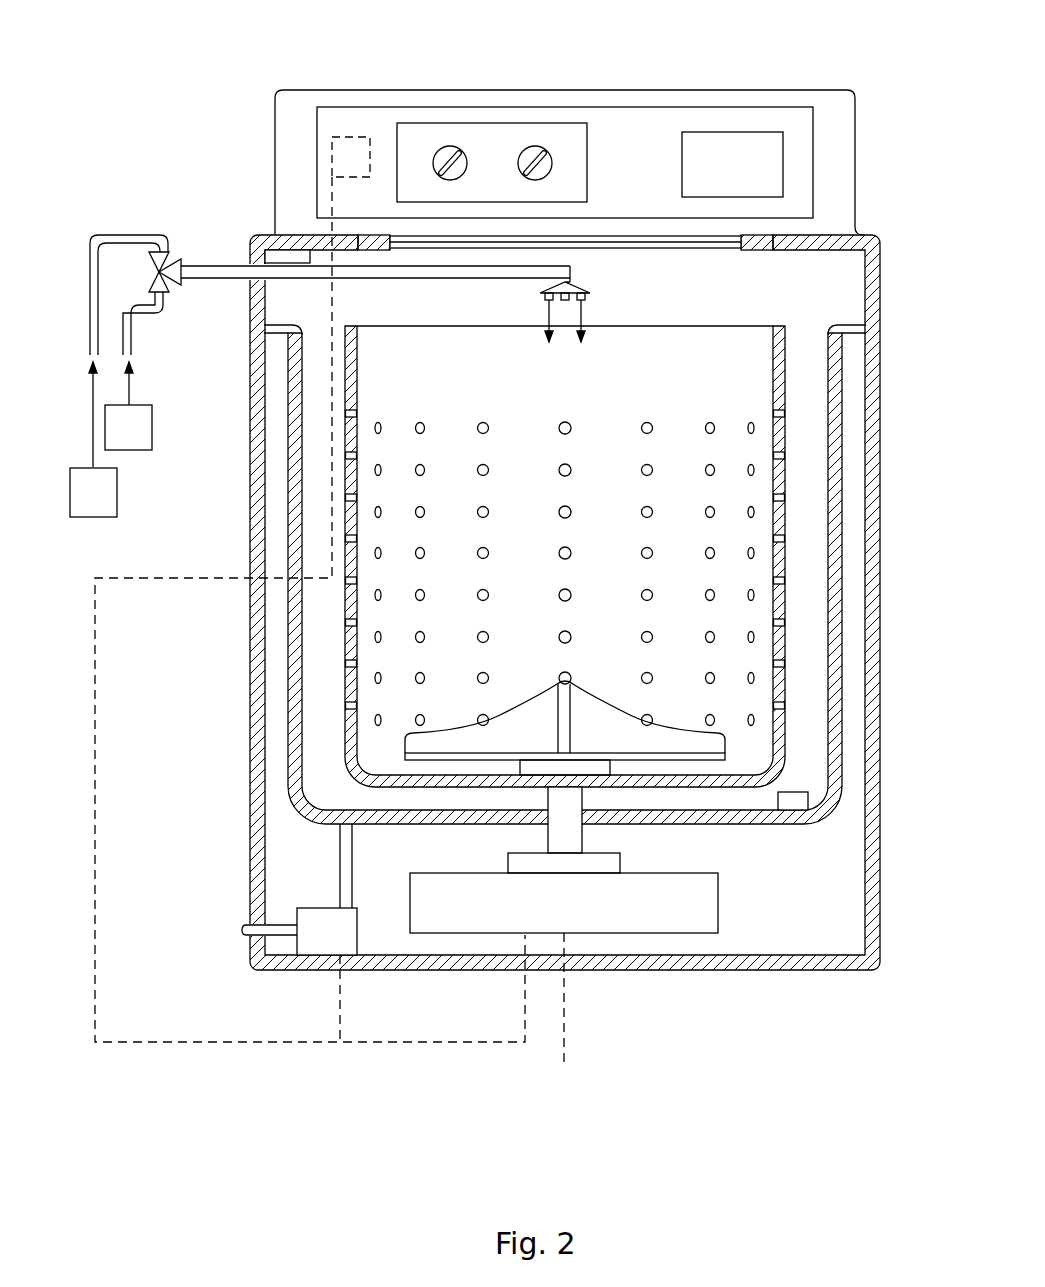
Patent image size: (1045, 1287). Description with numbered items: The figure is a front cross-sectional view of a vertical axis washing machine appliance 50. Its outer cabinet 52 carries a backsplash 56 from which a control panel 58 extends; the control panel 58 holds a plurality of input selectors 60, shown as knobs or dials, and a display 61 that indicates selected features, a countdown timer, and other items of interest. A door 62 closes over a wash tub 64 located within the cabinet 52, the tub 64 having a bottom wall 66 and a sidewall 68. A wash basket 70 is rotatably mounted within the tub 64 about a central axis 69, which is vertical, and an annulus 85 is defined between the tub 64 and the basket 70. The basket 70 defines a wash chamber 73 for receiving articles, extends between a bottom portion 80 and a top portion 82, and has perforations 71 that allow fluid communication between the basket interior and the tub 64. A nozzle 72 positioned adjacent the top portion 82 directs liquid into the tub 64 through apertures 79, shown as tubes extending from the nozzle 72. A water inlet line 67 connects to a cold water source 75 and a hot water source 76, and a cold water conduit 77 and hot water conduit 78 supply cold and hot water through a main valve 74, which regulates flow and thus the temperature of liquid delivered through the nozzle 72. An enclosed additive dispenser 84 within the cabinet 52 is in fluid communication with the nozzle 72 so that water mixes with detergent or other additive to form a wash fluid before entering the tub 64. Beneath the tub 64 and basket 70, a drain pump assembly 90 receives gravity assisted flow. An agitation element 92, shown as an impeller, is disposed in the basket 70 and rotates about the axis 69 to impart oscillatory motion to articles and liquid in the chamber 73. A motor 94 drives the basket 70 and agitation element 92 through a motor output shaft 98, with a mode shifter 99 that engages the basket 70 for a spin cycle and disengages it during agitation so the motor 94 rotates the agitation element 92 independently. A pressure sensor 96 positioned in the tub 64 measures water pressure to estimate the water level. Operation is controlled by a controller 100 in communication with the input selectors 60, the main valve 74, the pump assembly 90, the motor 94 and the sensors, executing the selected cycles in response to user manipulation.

The washing machine appliance 50 is at (188, 72).
The cabinet 52 is at (875, 918).
The backsplash 56 is at (642, 147).
The control panel 58 is at (490, 128).
The input selectors 60 is at (437, 140).
The display 61 is at (713, 147).
The door 62 is at (717, 237).
The wash tub 64 is at (845, 612).
The bottom wall 66 is at (800, 817).
The water inlet line 67 is at (195, 266).
The sidewall 68 is at (842, 468).
The central axis 69 is at (565, 1013).
The wash basket 70 is at (786, 688).
The perforations 71 is at (412, 588).
The nozzle 72 is at (572, 282).
The wash chamber 73 is at (716, 368).
The main valve 74 is at (167, 252).
The cold water source 75 is at (110, 506).
The hot water source 76 is at (145, 443).
The cold water conduit 77 is at (89, 300).
The hot water conduit 78 is at (131, 326).
The apertures 79 is at (545, 296).
The bottom portion 80 is at (338, 770).
The top portion 82 is at (357, 355).
The additive dispenser 84 is at (318, 262).
The annulus 85 is at (322, 678).
The drain pump assembly 90 is at (328, 937).
The agitation element 92 is at (598, 718).
The motor 94 is at (488, 913).
The pressure sensor 96 is at (800, 803).
The motor output shaft 98 is at (572, 830).
The mode shifter 99 is at (530, 867).
The controller 100 is at (345, 137).